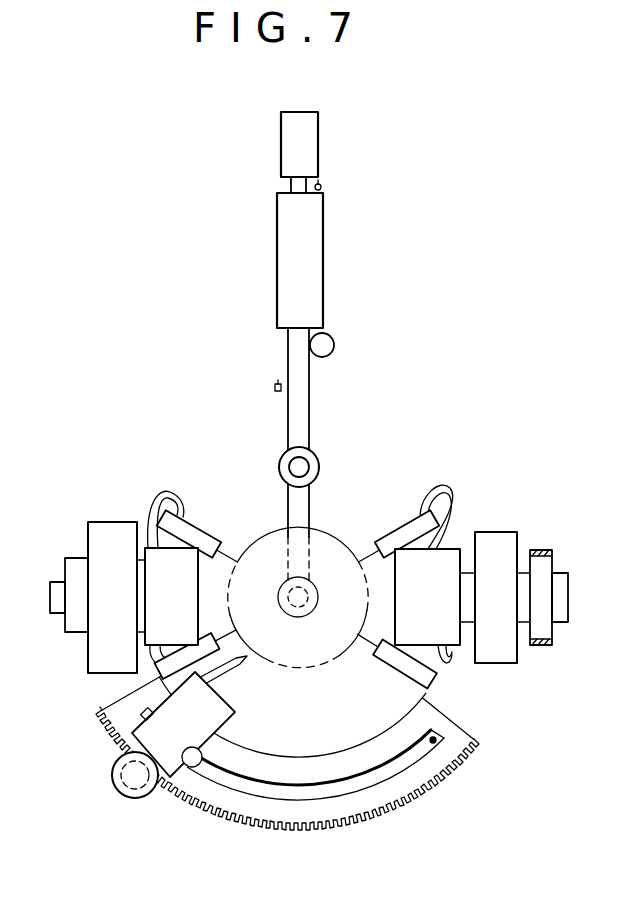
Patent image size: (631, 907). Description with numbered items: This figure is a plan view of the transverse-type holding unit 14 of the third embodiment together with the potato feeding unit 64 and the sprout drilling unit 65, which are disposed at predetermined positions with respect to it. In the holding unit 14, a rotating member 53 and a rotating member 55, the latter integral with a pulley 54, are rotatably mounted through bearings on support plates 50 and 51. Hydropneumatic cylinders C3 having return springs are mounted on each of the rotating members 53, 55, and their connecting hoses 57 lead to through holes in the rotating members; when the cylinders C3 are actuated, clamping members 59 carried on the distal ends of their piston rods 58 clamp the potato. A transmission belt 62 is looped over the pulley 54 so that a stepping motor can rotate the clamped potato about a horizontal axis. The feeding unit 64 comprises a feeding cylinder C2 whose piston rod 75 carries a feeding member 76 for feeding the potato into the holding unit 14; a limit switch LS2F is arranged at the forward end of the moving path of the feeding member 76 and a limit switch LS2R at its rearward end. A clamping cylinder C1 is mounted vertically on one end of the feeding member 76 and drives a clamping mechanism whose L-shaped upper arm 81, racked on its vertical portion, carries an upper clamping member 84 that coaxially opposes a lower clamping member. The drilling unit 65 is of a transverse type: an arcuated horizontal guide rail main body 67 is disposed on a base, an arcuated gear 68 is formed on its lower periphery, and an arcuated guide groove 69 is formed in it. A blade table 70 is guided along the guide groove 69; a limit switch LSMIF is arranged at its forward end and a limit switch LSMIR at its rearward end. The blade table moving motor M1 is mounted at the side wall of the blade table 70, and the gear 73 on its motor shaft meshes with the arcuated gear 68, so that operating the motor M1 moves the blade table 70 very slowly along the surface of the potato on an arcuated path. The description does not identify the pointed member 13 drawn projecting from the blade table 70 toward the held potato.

The pointer 13 is at (234, 676).
The holding unit 14 is at (374, 458).
The support plate 50 is at (98, 522).
The support plate 51 is at (510, 532).
The rotating member 53 is at (70, 558).
The pulley 54 is at (554, 635).
The rotating member 55 is at (456, 549).
The connecting hose 57 is at (160, 497).
The piston rod 58 is at (231, 589).
The clamping member 59 is at (235, 560).
The transmission belt 62 is at (548, 550).
The potato feeding unit 64 is at (382, 228).
The sprout drilling unit 65 is at (220, 845).
The guide rail main body 67 is at (450, 782).
The arcuated gear 68 is at (398, 810).
The arcuated guide groove 69 is at (297, 828).
The blade table 70 is at (236, 719).
The gear 73 is at (130, 798).
The piston rod 75 is at (291, 187).
The feeding member 76 is at (277, 245).
The upper arm 81 is at (288, 420).
The upper clamping member 84 is at (317, 459).
The clamping cylinder C1 is at (334, 341).
The feeding cylinder C2 is at (320, 148).
The hydropneumatic cylinder C3 is at (200, 524).
The limit switch LS2R is at (323, 186).
The limit switch LS2F is at (275, 387).
The limit switch LSMIR is at (179, 720).
The limit switch LSMIF is at (440, 738).
The blade table moving motor M1 is at (112, 776).